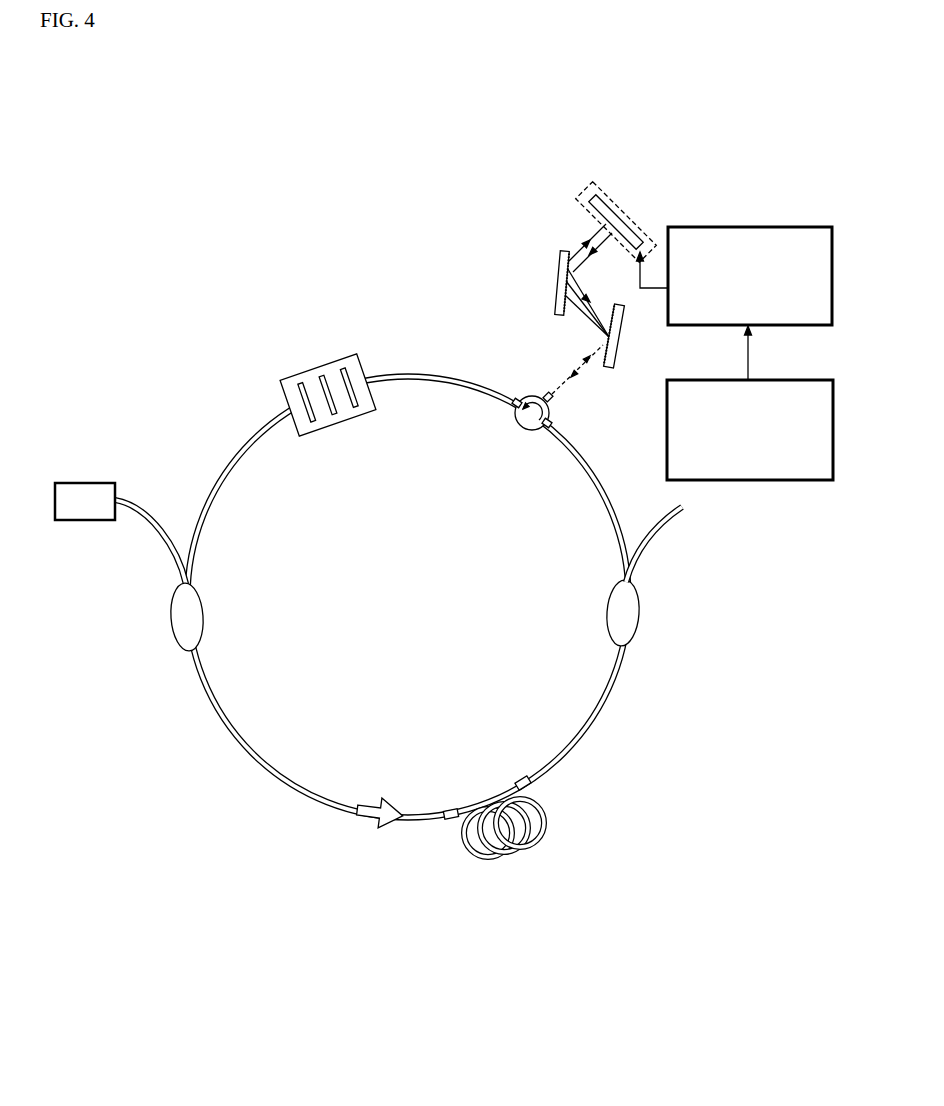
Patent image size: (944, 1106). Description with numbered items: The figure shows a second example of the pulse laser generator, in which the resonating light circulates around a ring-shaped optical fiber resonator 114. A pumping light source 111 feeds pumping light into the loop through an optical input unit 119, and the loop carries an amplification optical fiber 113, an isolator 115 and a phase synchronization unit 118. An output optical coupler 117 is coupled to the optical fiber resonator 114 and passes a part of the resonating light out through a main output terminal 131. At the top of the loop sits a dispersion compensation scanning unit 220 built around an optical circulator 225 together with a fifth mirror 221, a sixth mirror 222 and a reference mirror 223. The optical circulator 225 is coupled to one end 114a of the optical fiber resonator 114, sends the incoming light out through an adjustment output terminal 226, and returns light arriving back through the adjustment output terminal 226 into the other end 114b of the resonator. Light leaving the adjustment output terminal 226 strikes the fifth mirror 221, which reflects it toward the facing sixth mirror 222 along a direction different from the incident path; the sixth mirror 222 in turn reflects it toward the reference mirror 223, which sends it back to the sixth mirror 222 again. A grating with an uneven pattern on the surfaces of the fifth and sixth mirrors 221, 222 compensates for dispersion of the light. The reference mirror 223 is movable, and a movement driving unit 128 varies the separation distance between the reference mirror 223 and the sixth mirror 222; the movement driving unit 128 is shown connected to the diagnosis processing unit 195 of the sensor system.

The pumping light source 111 is at (85, 482).
The amplification optical fiber 113 is at (453, 820).
The optical fiber resonator 114 is at (230, 452).
The one end of the optical fiber resonator 114a is at (543, 432).
The other end of the optical fiber resonator 114b is at (512, 407).
The isolator 115 is at (365, 822).
The output optical coupler 117 is at (634, 617).
The phase synchronization unit 118 is at (312, 366).
The optical input unit 119 is at (177, 617).
The movement driving unit 128 is at (754, 227).
The main output terminal 131 is at (652, 530).
The diagnosis processing unit 195 is at (748, 484).
The dispersion compensation scanning unit 220 is at (492, 188).
The fifth mirror 221 is at (620, 337).
The sixth mirror 222 is at (553, 280).
The reference mirror 223 is at (608, 194).
The optical circulator 225 is at (530, 395).
The adjustment output terminal 226 is at (556, 399).